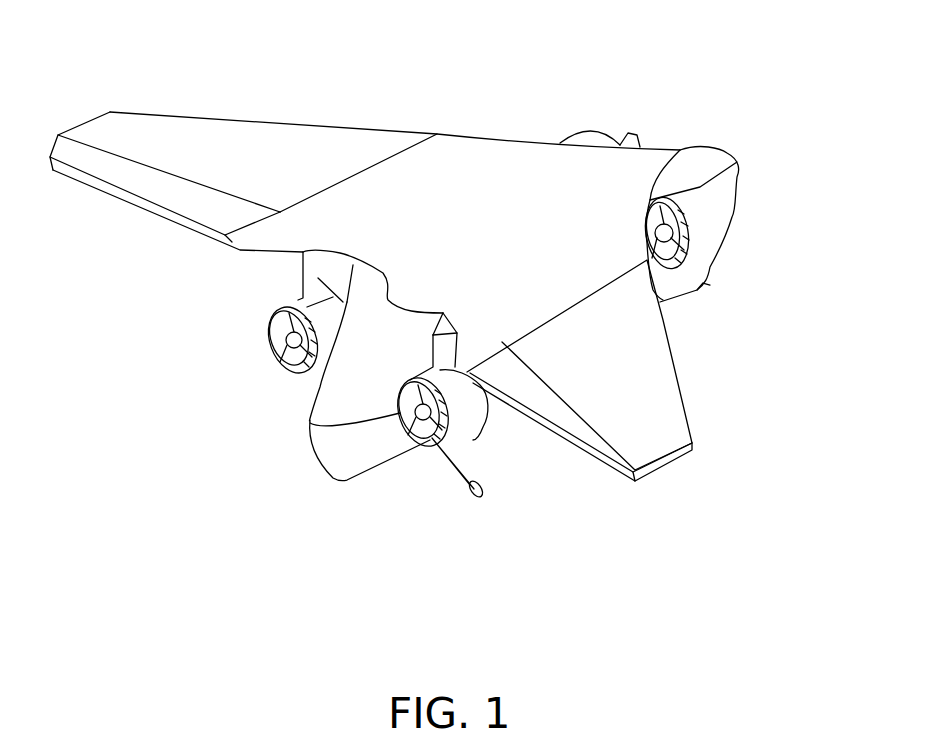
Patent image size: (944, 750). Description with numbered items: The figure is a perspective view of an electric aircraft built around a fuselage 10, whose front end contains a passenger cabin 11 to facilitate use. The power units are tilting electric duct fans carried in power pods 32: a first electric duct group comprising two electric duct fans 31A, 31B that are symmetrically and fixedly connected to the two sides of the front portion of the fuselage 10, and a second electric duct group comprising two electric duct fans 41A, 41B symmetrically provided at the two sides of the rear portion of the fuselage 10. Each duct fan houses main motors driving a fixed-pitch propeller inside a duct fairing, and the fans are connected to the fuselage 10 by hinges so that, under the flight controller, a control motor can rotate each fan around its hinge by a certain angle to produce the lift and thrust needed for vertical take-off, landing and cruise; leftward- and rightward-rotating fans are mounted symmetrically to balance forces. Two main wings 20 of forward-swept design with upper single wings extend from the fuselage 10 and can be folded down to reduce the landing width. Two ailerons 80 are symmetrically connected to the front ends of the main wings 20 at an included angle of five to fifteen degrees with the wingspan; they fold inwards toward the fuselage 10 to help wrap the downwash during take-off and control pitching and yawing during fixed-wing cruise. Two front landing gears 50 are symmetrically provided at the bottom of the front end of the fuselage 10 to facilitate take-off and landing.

The fuselage 10 is at (450, 143).
The passenger cabin 11 is at (358, 413).
The main wings 20 is at (258, 137).
The electric duct fan 31A is at (318, 323).
The electric duct fan 31B is at (458, 402).
The power pods 32 is at (315, 263).
The electric duct fan 41A is at (597, 142).
The electric duct fan 41B is at (710, 202).
The front landing gears 50 is at (466, 494).
The ailerons 80 is at (150, 188).